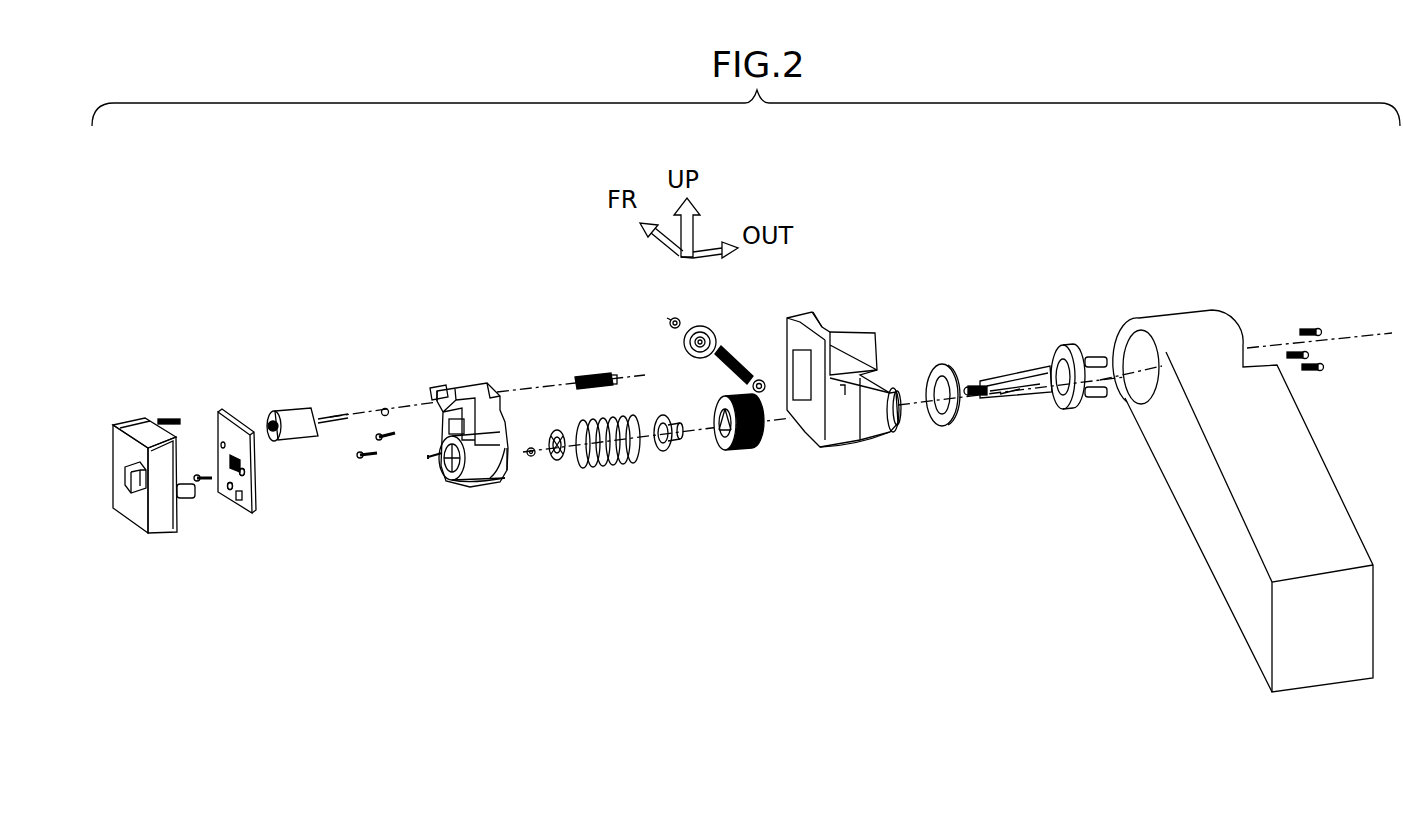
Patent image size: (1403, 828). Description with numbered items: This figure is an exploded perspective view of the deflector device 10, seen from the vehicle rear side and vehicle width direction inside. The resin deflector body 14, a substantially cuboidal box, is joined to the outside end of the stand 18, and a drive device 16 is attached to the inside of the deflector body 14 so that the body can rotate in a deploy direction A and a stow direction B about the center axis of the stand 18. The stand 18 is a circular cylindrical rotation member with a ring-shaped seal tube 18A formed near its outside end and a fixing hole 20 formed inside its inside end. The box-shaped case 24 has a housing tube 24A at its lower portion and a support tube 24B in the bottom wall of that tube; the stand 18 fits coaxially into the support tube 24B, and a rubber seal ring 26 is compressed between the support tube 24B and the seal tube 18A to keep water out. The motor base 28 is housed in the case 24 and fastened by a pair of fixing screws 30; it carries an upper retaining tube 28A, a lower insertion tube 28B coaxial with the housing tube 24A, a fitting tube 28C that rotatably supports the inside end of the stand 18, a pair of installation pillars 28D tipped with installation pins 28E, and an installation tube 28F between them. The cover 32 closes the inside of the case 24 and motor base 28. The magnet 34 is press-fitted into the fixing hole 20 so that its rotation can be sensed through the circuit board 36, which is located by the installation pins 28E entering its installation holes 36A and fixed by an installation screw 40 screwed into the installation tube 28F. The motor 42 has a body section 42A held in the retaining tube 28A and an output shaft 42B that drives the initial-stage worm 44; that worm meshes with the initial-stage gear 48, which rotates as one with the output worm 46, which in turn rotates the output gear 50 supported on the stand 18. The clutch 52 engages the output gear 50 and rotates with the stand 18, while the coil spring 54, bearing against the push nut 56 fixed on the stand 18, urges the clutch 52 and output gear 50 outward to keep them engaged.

The deflector device 10 is at (391, 270).
The deflector body 14 is at (1323, 457).
The drive device 16 is at (929, 298).
The stand 18 is at (1015, 377).
The seal tube 18A is at (1067, 345).
The fixing hole 20 is at (969, 398).
The case 24 is at (807, 317).
The housing tube 24A is at (860, 443).
The support tube 24B is at (896, 424).
The seal ring 26 is at (941, 426).
The motor base 28 is at (473, 380).
The retaining tube 28A is at (437, 383).
The insertion tube 28B is at (485, 478).
The fitting tube 28C is at (474, 478).
The installation pillars 28D is at (452, 482).
The installation pins 28E is at (437, 452).
The installation tube 28F is at (430, 443).
The fixing screws 30 is at (391, 442).
The cover 32 is at (132, 417).
The magnet 34 is at (531, 458).
The circuit board 36 is at (227, 410).
The installation holes 36A is at (230, 490).
The installation screw 40 is at (200, 471).
The motor 42 is at (307, 407).
The body section 42A is at (287, 402).
The output shaft 42B is at (342, 411).
The initial-stage worm 44 is at (590, 370).
The output worm 46 is at (738, 358).
The initial-stage gear 48 is at (700, 325).
The output gear 50 is at (740, 456).
The clutch 52 is at (665, 453).
The coil spring 54 is at (610, 458).
The push nut 56 is at (560, 462).
The deploy direction A is at (1088, 421).
The stow direction B is at (1080, 330).